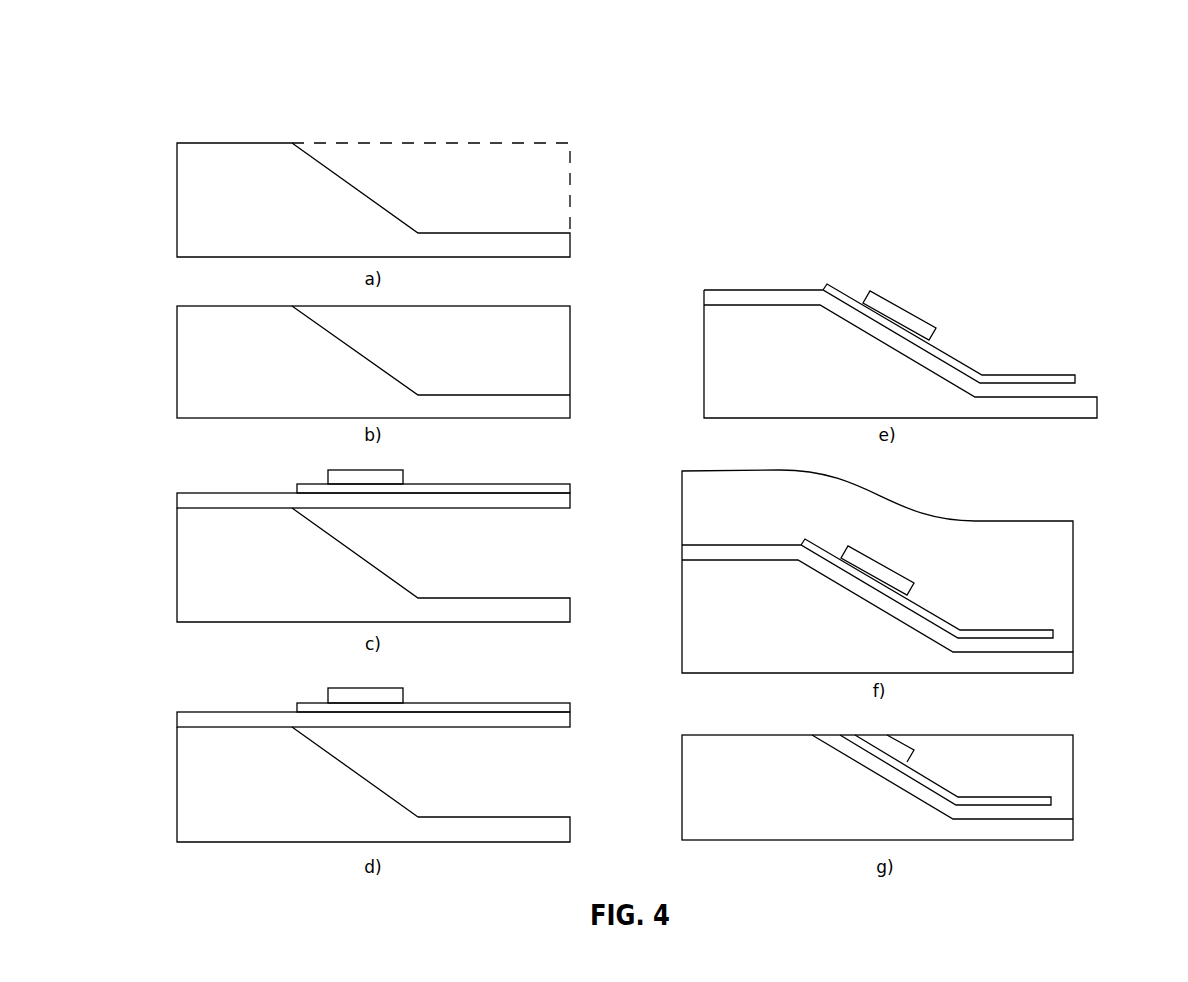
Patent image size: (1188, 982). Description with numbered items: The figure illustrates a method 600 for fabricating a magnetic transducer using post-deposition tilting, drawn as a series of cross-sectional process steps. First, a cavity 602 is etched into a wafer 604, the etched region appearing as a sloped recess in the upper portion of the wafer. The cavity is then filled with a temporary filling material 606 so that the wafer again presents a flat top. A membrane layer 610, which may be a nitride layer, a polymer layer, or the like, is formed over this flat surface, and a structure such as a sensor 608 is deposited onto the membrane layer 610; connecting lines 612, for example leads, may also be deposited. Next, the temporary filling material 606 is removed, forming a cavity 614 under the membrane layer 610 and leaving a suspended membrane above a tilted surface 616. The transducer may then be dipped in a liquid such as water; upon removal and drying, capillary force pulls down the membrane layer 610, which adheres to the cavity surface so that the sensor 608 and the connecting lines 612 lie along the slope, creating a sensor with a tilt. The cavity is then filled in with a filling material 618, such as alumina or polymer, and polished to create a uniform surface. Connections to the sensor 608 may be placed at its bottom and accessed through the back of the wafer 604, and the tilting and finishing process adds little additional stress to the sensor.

The method 600 is at (1083, 174).
The cavity 602 is at (526, 174).
The wafer 604 is at (228, 142).
The temporary filling material 606 is at (577, 337).
The sensor 608 is at (403, 478).
The membrane layer 610 is at (571, 500).
The connecting lines 612 is at (480, 484).
The cavity 614 is at (504, 802).
The tilted surface 616 is at (362, 777).
The filling material 618 is at (1076, 534).